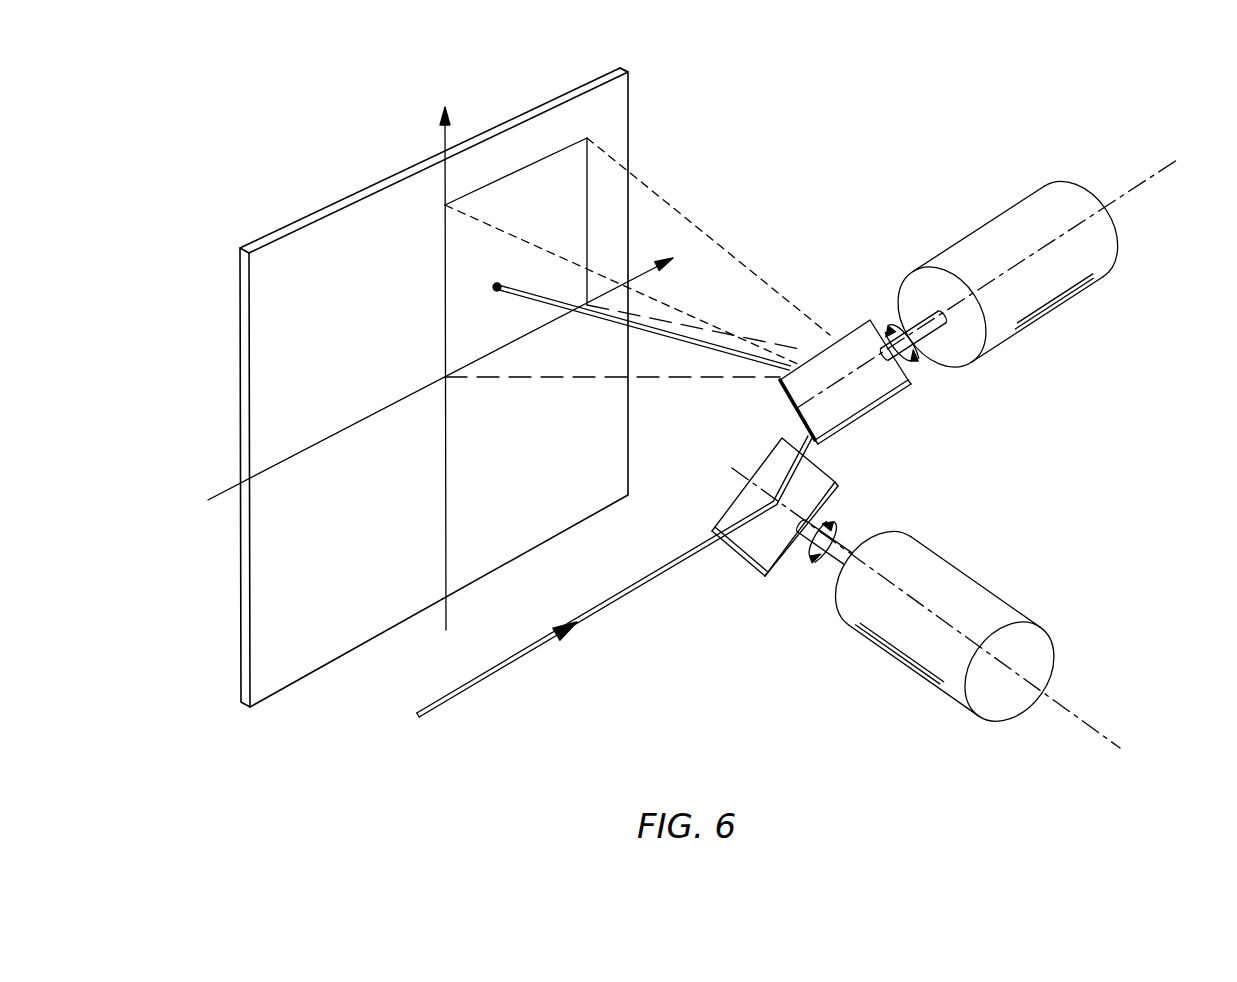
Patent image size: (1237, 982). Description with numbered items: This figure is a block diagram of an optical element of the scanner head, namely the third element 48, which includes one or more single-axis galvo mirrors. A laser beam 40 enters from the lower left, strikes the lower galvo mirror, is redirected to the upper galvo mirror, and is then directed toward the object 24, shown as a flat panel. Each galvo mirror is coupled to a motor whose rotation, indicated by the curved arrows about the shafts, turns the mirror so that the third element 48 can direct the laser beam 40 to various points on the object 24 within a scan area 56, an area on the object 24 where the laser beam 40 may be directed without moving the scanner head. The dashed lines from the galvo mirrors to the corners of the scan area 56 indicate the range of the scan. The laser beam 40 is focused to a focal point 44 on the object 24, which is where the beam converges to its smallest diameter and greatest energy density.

The object 24 is at (620, 89).
The scan area 56 is at (537, 187).
The focal point 44 is at (493, 287).
The laser beam 40 is at (621, 598).
The third element 48 is at (1145, 384).